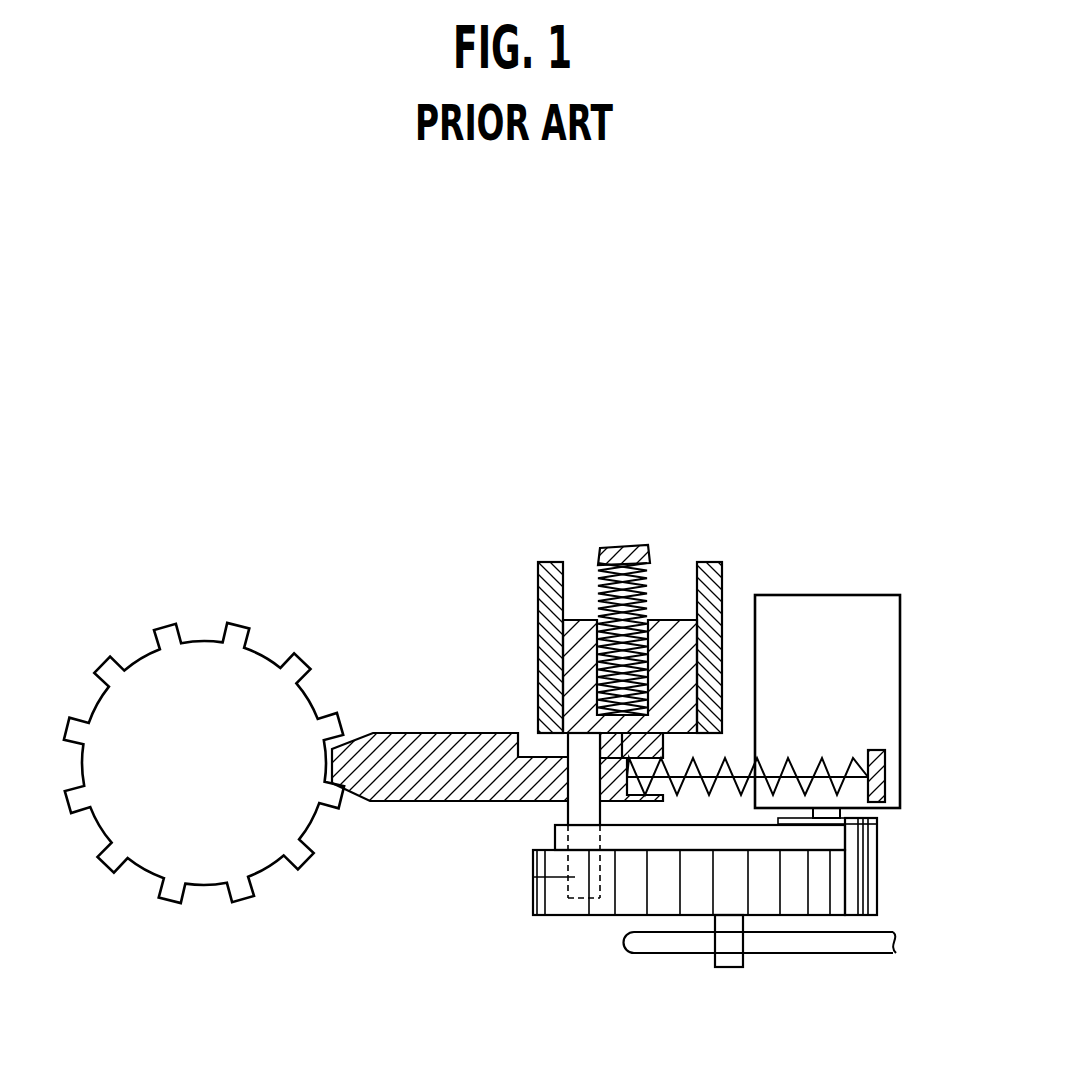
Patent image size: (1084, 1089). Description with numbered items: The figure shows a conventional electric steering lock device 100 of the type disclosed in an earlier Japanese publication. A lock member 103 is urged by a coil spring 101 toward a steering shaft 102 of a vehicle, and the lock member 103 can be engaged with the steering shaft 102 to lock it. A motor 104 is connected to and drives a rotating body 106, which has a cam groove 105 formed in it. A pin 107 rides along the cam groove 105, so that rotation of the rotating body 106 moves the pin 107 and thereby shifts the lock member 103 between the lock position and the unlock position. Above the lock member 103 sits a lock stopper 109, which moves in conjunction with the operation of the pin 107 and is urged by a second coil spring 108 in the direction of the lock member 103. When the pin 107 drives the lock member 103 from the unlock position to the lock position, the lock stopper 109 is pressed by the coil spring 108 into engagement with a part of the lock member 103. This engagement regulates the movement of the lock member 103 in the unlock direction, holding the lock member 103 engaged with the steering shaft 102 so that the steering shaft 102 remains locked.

The electric steering lock device 100 is at (774, 506).
The coil spring 101 is at (828, 755).
The steering shaft 102 is at (238, 628).
The lock member 103 is at (414, 733).
The motor 104 is at (857, 605).
The cam groove 105 is at (525, 885).
The rotating body 106 is at (557, 917).
The pin 107 is at (567, 813).
The coil spring 108 is at (638, 572).
The lock stopper 109 is at (585, 617).